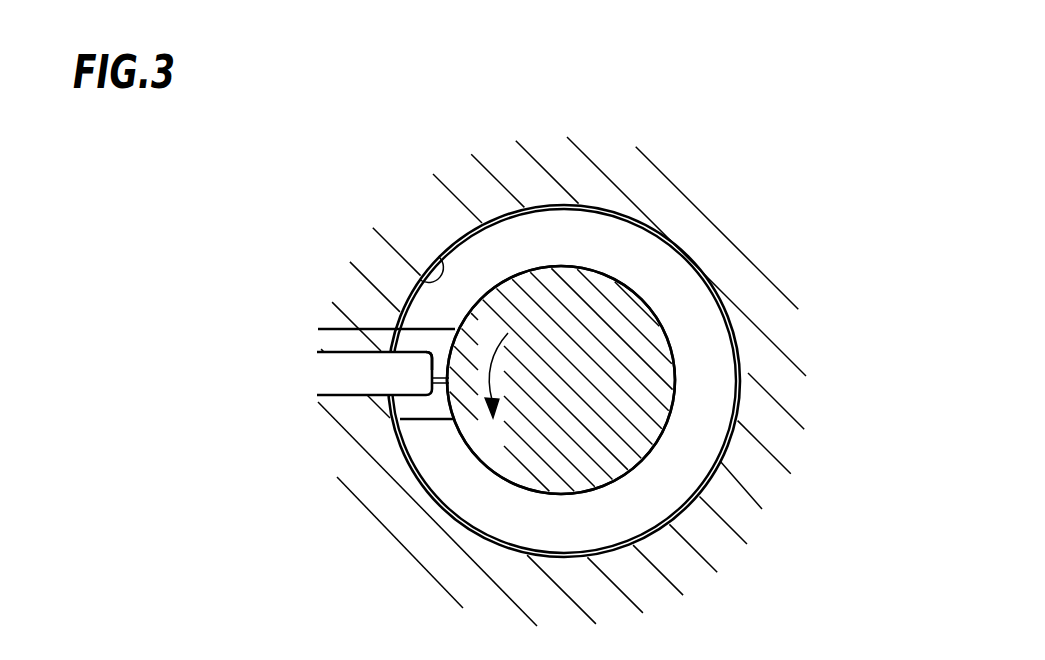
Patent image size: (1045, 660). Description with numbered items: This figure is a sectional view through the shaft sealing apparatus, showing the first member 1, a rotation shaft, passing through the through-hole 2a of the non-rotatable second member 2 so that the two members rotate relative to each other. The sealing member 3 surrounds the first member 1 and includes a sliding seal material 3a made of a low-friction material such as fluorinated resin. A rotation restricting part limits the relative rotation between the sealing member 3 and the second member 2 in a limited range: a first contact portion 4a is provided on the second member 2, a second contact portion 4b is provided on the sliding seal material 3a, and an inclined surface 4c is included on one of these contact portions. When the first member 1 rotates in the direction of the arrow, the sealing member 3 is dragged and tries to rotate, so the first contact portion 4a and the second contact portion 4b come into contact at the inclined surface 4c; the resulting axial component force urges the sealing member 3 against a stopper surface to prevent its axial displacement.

The first member 1 is at (637, 443).
The second member 2 is at (662, 195).
The through-hole 2a is at (442, 258).
The sealing member 3 is at (735, 380).
The sliding seal material 3a is at (682, 301).
The first contact portion 4a is at (347, 387).
The second contact portion 4b is at (425, 410).
The inclined surface 4c is at (423, 341).